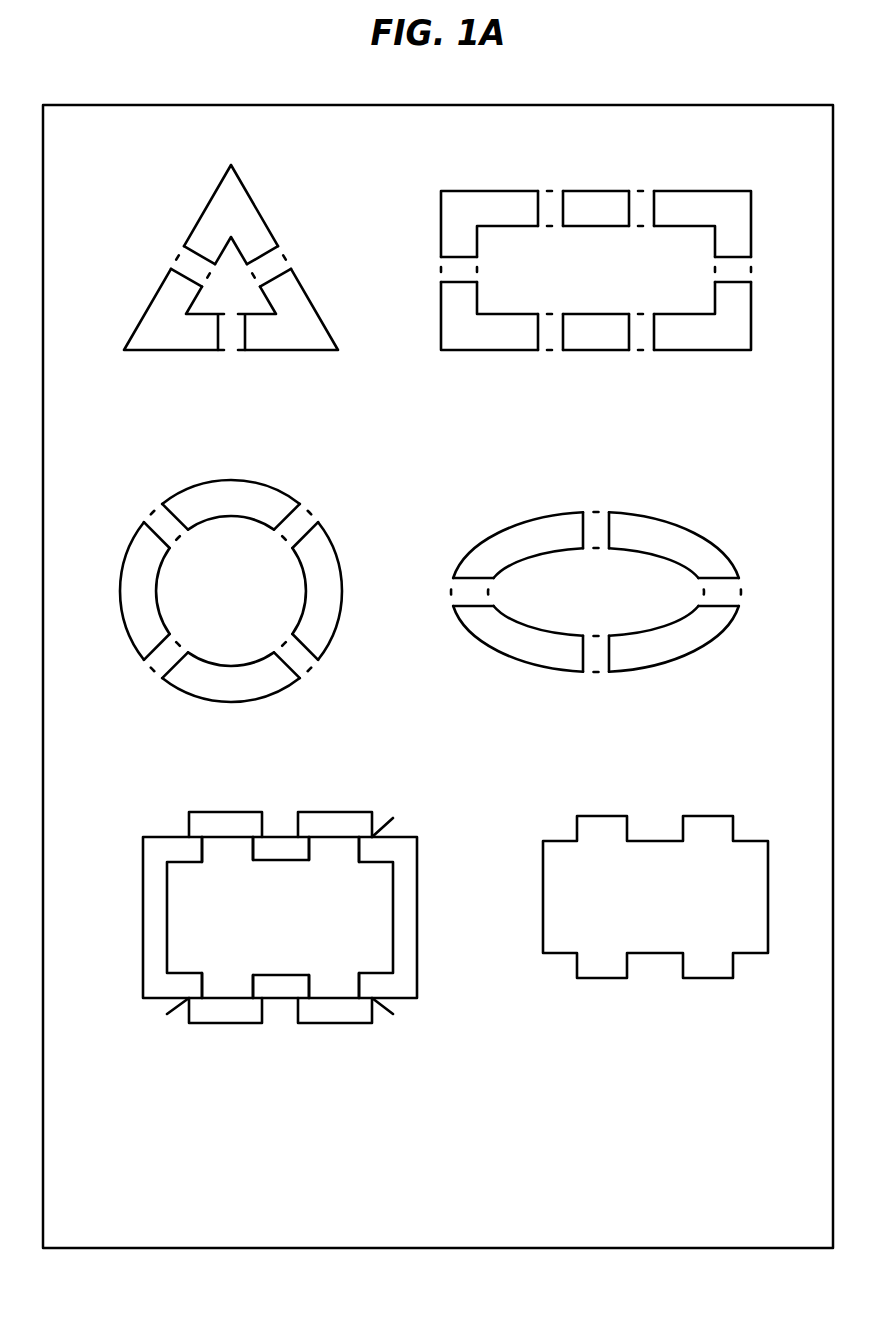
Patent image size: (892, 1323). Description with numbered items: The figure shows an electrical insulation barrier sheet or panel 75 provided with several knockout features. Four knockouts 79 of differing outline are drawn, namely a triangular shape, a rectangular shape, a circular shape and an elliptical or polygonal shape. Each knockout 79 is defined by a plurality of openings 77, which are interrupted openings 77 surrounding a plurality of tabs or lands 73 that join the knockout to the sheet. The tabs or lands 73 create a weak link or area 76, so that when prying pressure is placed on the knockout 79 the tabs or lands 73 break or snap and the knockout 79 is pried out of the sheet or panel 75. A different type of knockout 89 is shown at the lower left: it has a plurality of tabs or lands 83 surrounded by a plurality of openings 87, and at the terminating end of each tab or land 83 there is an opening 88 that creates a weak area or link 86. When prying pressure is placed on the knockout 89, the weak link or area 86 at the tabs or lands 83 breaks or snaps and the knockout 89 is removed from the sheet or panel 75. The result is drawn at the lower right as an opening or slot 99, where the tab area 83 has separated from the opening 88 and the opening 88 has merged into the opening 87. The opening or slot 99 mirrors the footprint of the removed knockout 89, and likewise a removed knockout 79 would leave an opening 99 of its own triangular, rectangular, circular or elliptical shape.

The electrical insulation barrier sheet 75 is at (707, 105).
The openings 77 is at (167, 351).
The knockout 79 is at (219, 298).
The tabs or lands 73 is at (287, 258).
The weak link or area 76 is at (177, 277).
The tabs or lands 83 is at (226, 841).
The weak area or link 86 is at (404, 810).
The openings 87 is at (278, 837).
The opening 88 is at (223, 812).
The knockout 89 is at (270, 935).
The opening or slot 99 is at (645, 933).